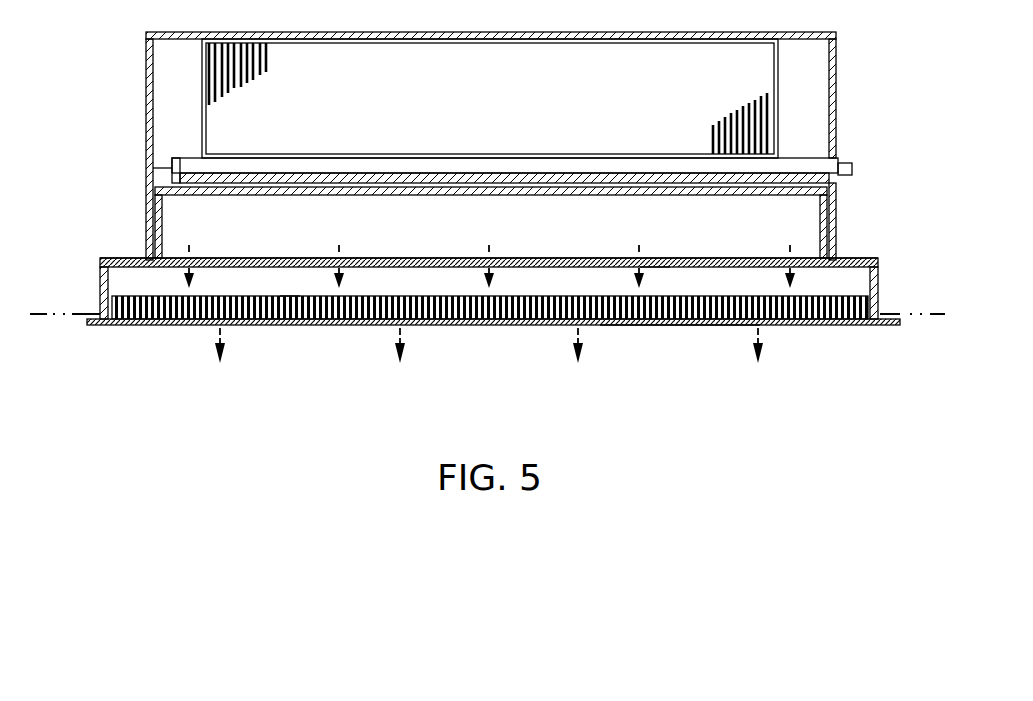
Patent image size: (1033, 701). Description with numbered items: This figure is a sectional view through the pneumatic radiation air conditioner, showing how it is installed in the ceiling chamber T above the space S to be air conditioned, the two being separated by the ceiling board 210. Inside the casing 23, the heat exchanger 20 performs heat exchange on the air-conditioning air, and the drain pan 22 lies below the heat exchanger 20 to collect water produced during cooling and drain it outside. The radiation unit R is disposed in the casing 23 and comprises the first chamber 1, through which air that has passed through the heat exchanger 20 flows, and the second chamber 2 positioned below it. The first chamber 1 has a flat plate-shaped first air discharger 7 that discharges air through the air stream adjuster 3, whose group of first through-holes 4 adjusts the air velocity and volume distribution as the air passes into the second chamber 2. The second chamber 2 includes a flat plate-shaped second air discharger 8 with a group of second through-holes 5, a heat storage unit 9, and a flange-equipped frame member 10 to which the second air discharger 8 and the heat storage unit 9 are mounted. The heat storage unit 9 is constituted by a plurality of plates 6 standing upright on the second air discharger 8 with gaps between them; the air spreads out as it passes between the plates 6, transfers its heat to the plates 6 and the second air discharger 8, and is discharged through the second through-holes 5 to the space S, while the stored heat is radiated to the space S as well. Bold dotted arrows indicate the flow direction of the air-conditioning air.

The first chamber 1 is at (798, 184).
The second chamber 2 is at (520, 347).
The air stream adjuster 3 is at (489, 233).
The first through-holes 4 is at (616, 258).
The second through-holes 5 is at (200, 325).
The plates 6 is at (290, 309).
The first air discharger 7 is at (655, 258).
The second air discharger 8 is at (677, 327).
The heat storage unit 9 is at (290, 287).
The flange-equipped frame member 10 is at (876, 297).
The heat exchanger 20 is at (778, 75).
The drain pan 22 is at (172, 162).
The casing 23 is at (146, 67).
The ceiling board 210 is at (48, 325).
The radiation unit R is at (836, 222).
The space to be air conditioned S is at (512, 421).
The ceiling chamber T is at (936, 112).